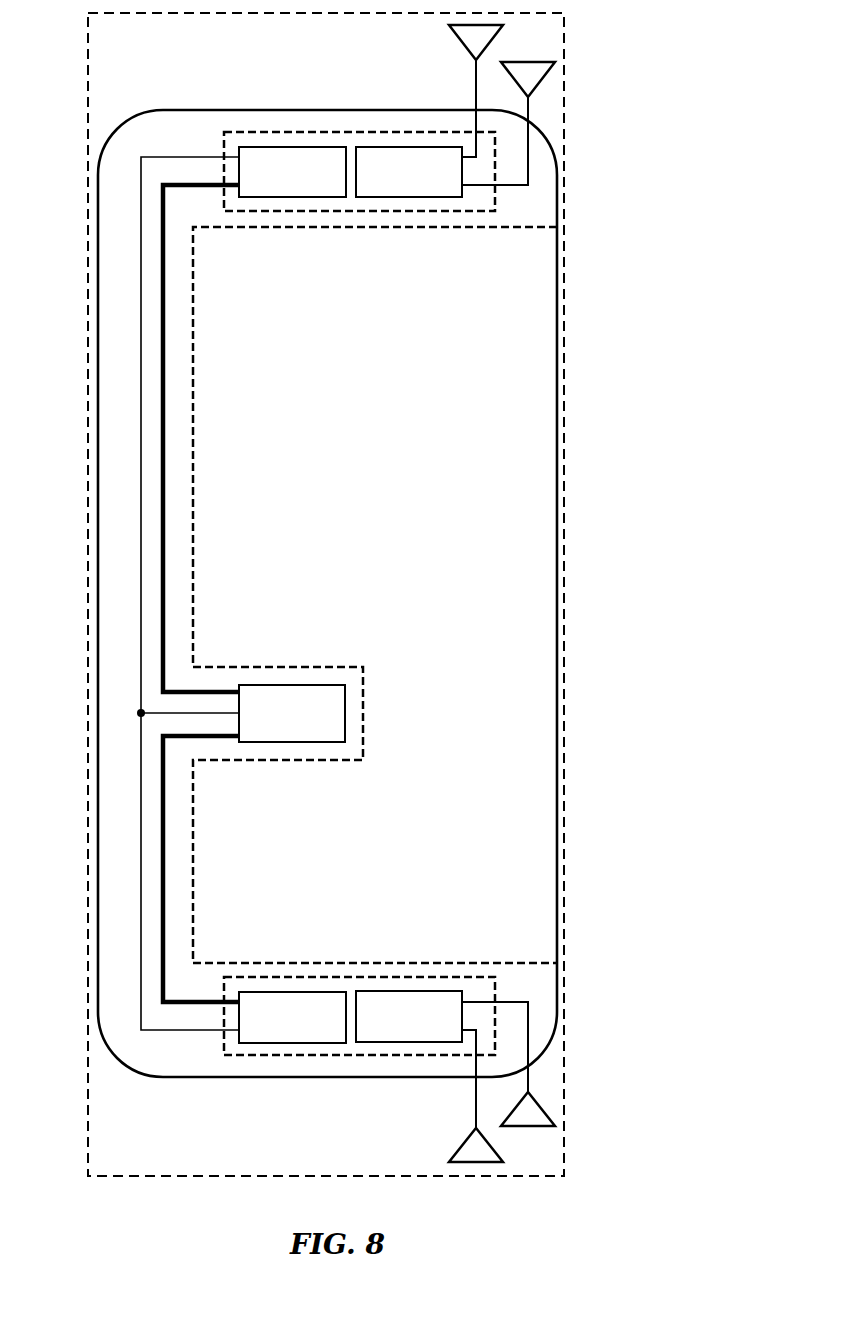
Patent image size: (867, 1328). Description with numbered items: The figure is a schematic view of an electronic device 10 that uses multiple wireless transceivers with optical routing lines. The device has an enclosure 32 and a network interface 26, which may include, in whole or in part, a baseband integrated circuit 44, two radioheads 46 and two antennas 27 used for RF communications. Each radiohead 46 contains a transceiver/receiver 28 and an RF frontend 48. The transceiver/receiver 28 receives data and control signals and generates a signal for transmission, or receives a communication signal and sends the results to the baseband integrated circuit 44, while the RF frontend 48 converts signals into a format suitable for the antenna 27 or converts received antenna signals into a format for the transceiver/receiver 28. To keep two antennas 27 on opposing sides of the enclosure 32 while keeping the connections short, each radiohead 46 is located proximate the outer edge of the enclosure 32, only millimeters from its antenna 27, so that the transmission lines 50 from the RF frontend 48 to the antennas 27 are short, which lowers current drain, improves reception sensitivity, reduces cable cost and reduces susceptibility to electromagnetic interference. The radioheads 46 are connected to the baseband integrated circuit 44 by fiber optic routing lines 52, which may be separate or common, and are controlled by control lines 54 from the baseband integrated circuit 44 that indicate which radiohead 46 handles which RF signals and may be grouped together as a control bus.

The electronic device 10 is at (645, 34).
The network interface 26 is at (88, 590).
The antenna 27 is at (521, 62).
The transceiver/receiver 28 is at (290, 147).
The enclosure 32 is at (328, 130).
The baseband integrated circuit 44 is at (290, 742).
The radiohead 46 is at (355, 211).
The RF frontend 48 is at (410, 147).
The transmission line 50 is at (528, 158).
The fiber optic routing line 52 is at (163, 440).
The control line 54 is at (141, 437).